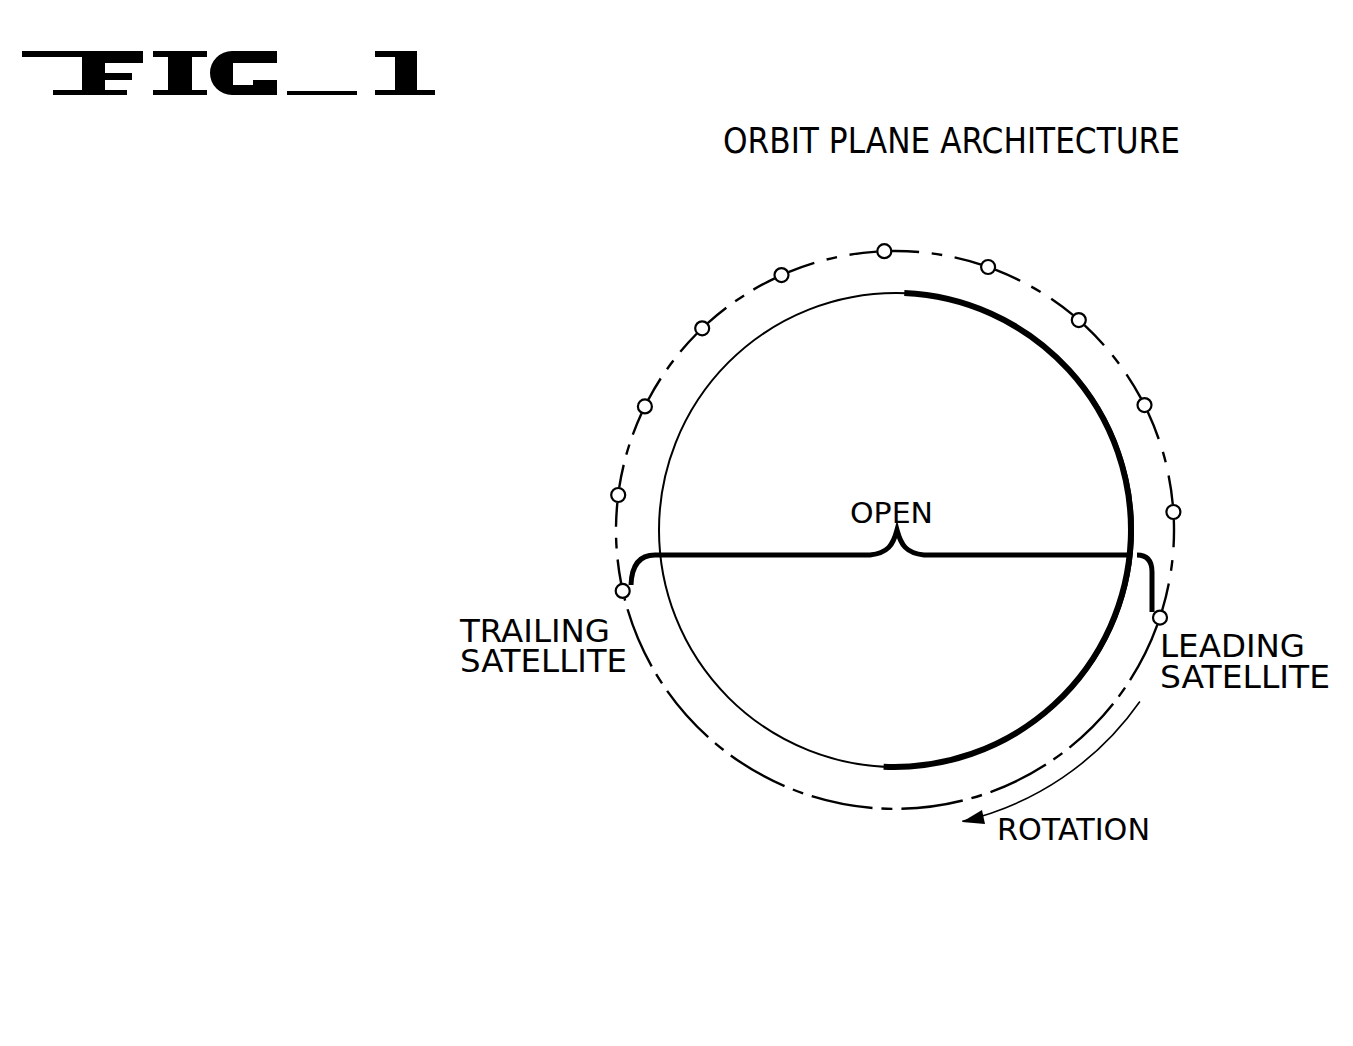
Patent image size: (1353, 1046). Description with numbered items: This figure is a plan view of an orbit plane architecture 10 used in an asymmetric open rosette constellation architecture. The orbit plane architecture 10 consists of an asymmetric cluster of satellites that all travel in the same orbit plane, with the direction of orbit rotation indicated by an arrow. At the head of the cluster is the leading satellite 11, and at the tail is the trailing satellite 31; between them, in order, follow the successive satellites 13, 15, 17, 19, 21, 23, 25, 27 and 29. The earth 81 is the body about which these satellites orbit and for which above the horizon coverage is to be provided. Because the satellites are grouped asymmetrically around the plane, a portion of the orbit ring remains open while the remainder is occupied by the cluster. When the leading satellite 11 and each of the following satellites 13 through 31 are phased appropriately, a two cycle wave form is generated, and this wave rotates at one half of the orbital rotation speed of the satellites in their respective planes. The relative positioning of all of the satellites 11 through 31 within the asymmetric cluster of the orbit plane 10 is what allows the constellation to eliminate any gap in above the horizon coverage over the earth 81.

The orbit plane architecture 10 is at (625, 814).
The leading satellite 11 is at (1168, 614).
The satellite 13 is at (1181, 509).
The satellite 15 is at (1151, 401).
The satellite 17 is at (1085, 316).
The satellite 19 is at (993, 261).
The satellite 21 is at (881, 245).
The satellite 23 is at (776, 270).
The satellite 25 is at (695, 327).
The satellite 27 is at (638, 404).
The satellite 29 is at (611, 495).
The trailing satellite 31 is at (615, 590).
The earth 81 is at (1100, 436).